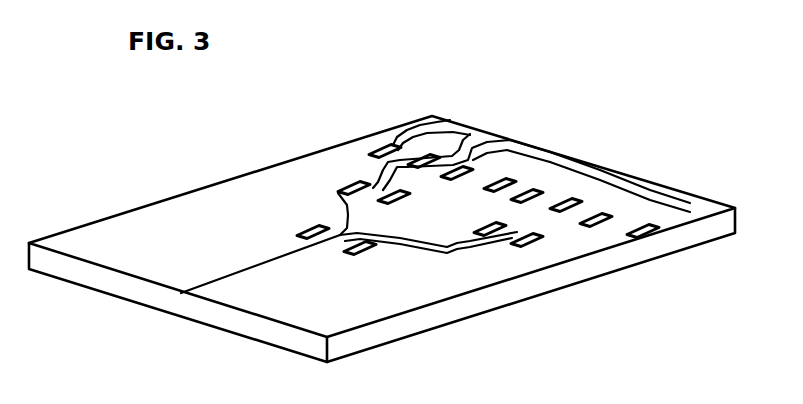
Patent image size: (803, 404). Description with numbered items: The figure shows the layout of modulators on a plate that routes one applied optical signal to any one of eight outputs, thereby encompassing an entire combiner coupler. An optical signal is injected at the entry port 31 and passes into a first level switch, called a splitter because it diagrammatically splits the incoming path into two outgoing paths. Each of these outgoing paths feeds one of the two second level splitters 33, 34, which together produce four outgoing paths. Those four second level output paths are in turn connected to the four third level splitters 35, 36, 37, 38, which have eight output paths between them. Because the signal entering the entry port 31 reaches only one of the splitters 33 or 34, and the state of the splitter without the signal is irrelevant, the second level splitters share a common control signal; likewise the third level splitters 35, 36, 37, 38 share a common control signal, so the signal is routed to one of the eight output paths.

The entry port 31 is at (181, 293).
The second level splitter 33 is at (350, 183).
The second level splitter 34 is at (540, 233).
The third level splitter 35 is at (437, 122).
The third level splitter 36 is at (490, 143).
The third level splitter 37 is at (553, 176).
The third level splitter 38 is at (607, 213).